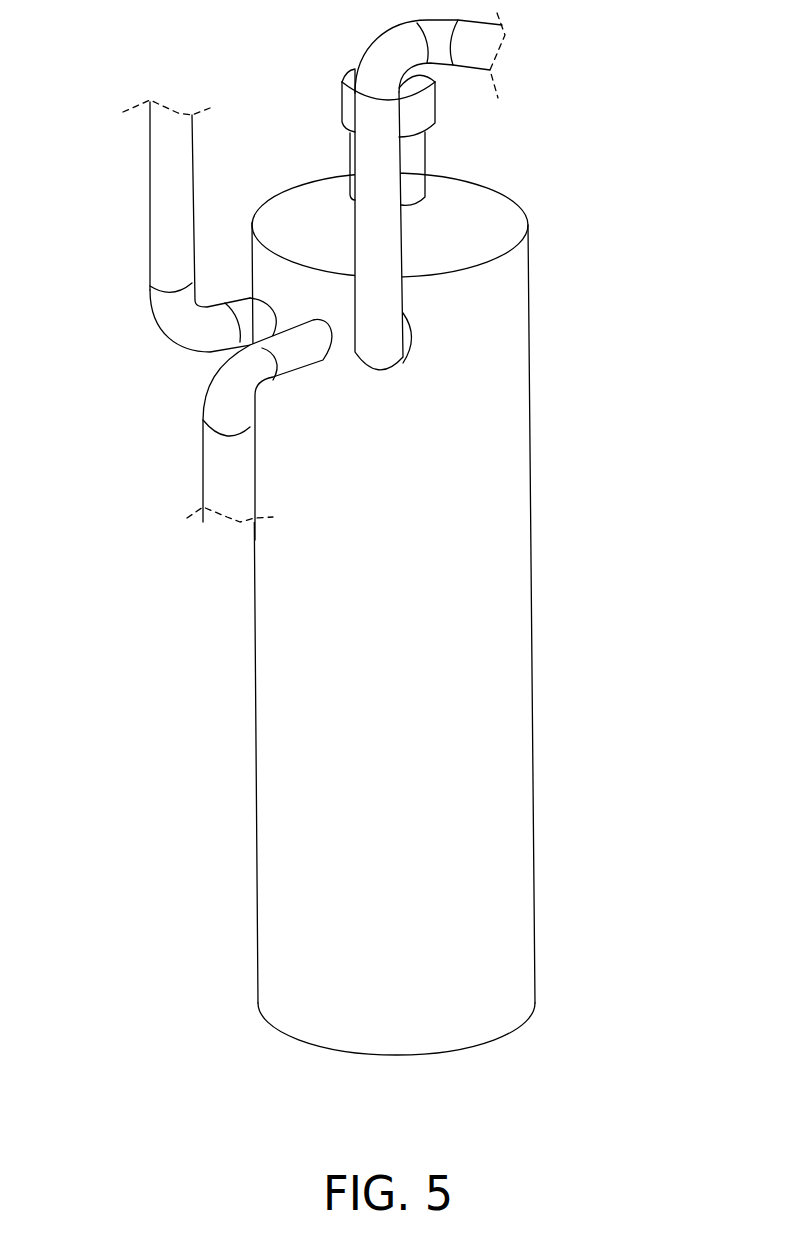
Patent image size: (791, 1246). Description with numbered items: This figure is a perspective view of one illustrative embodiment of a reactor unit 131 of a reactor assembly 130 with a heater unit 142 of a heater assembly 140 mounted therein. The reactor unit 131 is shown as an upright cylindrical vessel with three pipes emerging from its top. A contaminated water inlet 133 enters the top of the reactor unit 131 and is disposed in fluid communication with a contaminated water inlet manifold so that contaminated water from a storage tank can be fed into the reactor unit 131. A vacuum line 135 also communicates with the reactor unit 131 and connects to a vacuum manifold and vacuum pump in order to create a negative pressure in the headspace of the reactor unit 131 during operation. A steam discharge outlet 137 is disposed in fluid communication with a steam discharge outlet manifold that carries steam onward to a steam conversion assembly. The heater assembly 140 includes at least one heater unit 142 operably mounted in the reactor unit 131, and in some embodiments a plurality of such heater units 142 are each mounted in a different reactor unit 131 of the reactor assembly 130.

The reactor assembly 130 is at (455, 614).
The reactor unit 131 is at (418, 610).
The contaminated water inlet 133 is at (393, 235).
The vacuum line 135 is at (203, 450).
The steam discharge outlet 137 is at (150, 222).
The heater assembly 140 is at (409, 116).
The heater unit 142 is at (341, 107).